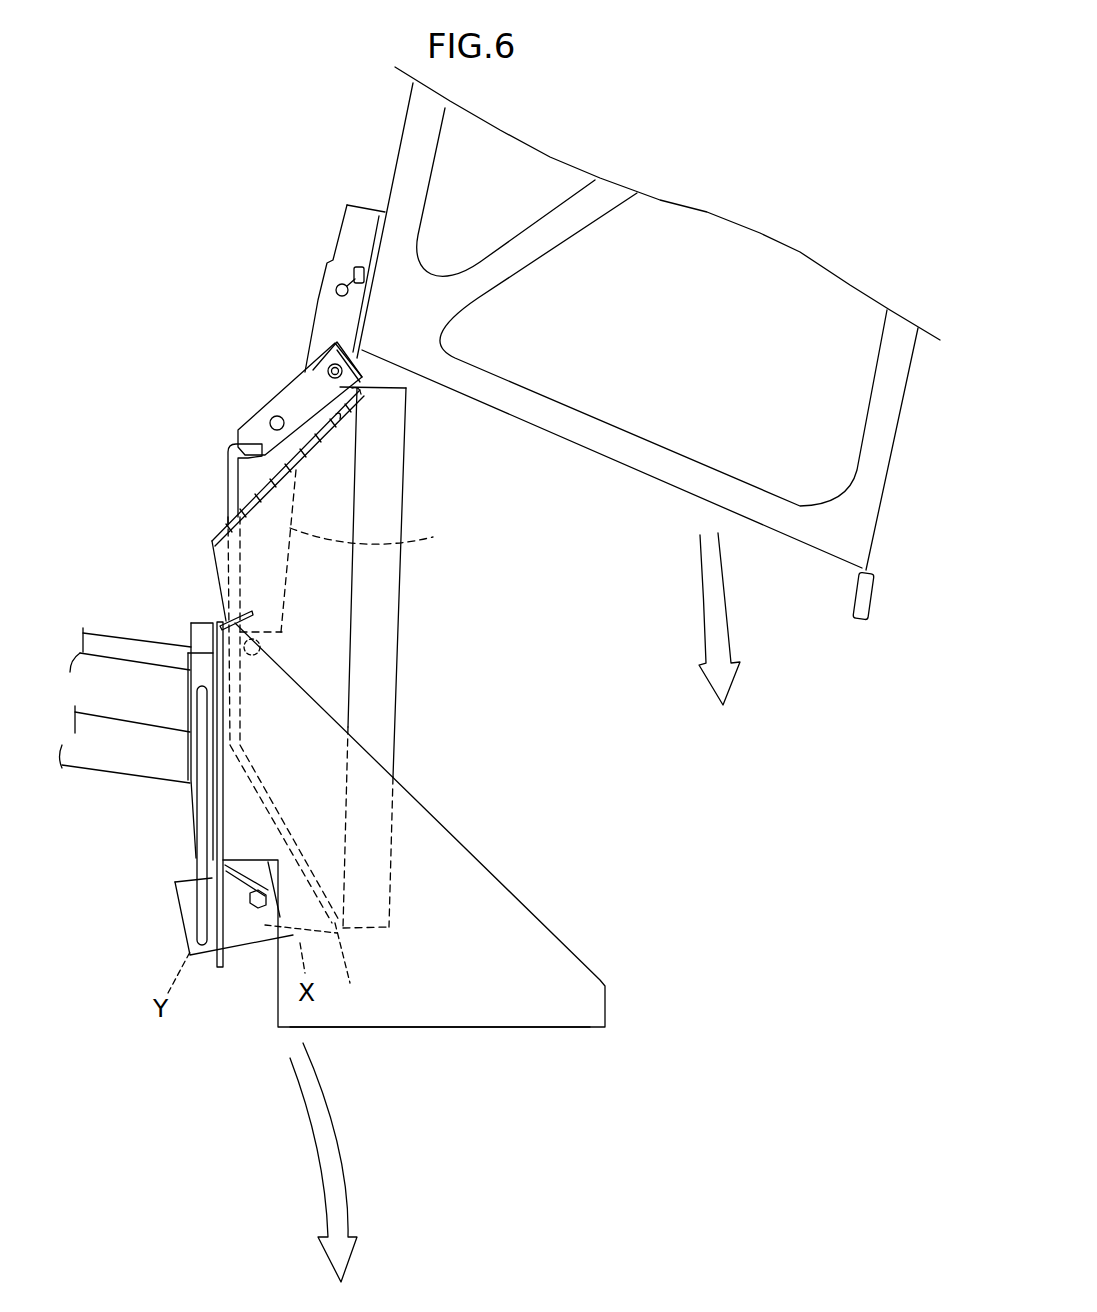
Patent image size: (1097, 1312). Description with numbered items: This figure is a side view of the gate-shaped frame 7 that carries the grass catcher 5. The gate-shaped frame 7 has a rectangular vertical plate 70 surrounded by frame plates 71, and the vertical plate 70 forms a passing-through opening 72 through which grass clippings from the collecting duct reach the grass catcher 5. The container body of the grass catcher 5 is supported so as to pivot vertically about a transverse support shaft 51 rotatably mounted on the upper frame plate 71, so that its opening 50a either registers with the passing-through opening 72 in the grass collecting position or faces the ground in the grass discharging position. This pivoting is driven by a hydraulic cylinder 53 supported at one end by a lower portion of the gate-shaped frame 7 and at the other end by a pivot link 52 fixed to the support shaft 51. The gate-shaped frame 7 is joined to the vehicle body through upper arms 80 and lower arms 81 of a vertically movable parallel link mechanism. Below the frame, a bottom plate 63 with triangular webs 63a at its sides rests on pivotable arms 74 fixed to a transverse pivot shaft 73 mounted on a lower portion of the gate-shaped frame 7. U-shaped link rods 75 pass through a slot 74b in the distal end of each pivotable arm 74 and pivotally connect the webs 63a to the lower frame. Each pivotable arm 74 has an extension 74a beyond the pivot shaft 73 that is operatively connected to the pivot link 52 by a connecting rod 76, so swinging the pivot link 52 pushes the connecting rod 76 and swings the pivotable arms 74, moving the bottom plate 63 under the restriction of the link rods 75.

The grass catcher 5 is at (383, 145).
The gate-shaped frame 7 is at (238, 397).
The opening 50a is at (580, 463).
The transverse support shaft 51 is at (310, 372).
The pivot link 52 is at (250, 428).
The hydraulic cylinder 53 is at (355, 551).
The bottom plate 63 is at (225, 825).
The web 63a is at (357, 1017).
The vertical plate 70 is at (220, 527).
The frame plate 71 is at (350, 403).
The passing-through opening 72 is at (372, 642).
The transverse pivot shaft 73 is at (252, 905).
The pivotable arm 74 is at (188, 832).
The extension 74a is at (308, 812).
The slot 74b is at (207, 707).
The link rod 75 is at (188, 897).
The connecting rod 76 is at (228, 490).
The upper arm 80 is at (110, 640).
The lower arm 81 is at (133, 760).